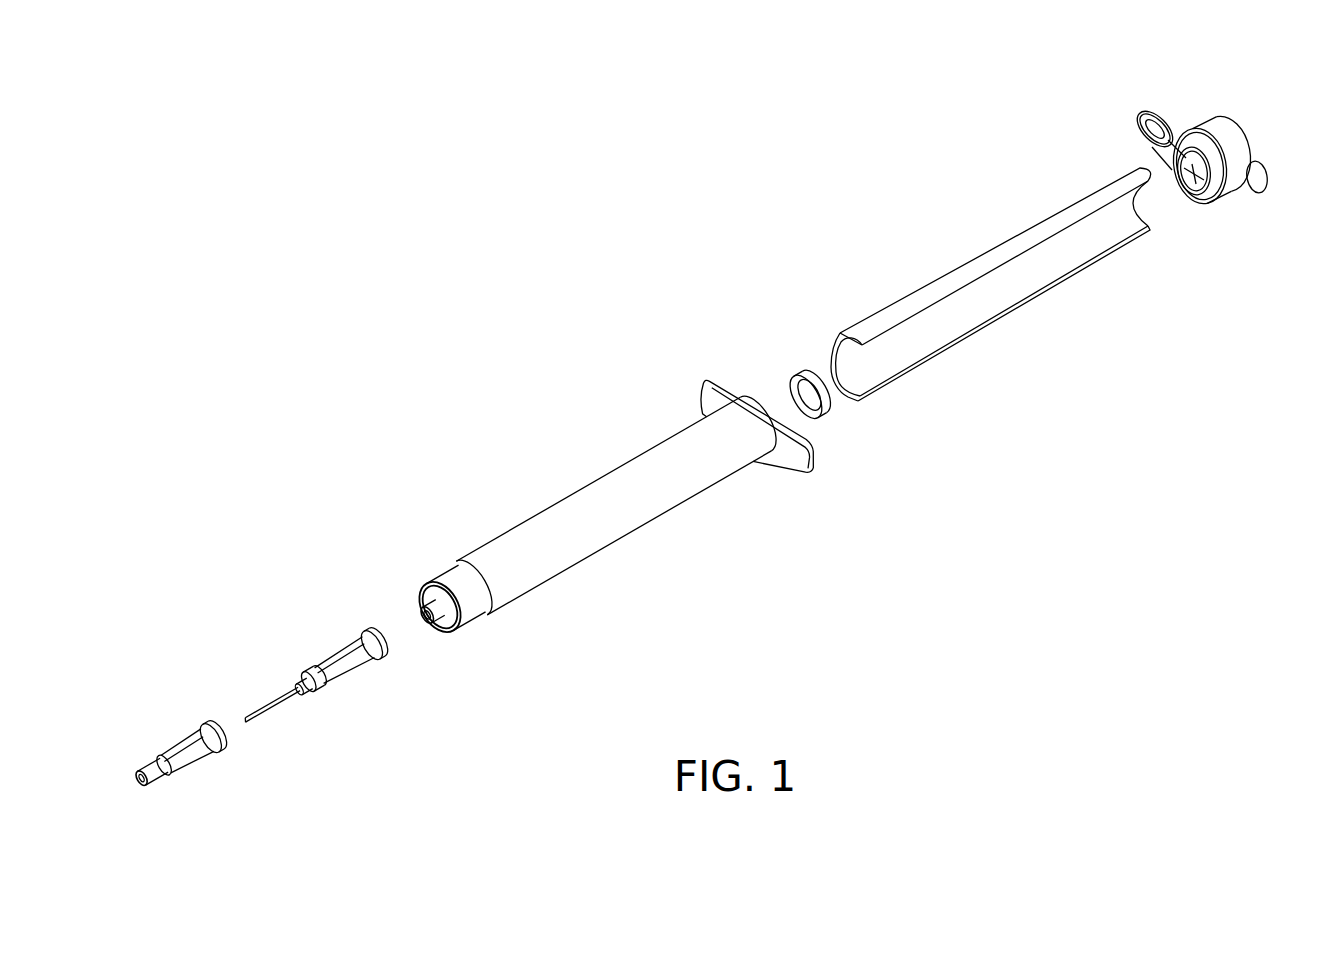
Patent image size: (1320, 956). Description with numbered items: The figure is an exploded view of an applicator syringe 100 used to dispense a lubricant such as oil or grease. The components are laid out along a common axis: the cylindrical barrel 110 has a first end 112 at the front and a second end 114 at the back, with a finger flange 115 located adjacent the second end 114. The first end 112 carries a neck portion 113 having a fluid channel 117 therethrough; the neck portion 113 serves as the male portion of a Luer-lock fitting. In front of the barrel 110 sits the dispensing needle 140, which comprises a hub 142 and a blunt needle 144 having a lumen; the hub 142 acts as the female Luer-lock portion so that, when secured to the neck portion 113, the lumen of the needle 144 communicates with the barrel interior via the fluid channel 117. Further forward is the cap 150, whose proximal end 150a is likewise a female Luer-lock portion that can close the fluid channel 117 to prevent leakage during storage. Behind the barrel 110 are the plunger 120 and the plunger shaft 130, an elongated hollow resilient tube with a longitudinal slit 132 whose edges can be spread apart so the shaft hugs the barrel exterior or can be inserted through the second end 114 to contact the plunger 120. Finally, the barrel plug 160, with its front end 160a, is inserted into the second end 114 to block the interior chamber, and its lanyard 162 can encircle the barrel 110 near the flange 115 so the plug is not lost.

The applicator syringe 100 is at (393, 233).
The barrel 110 is at (563, 527).
The first end 112 is at (502, 593).
The neck portion 113 is at (457, 585).
The second end 114 is at (748, 445).
The finger flange 115 is at (712, 393).
The fluid channel 117 is at (423, 613).
The plunger 120 is at (808, 380).
The plunger shaft 130 is at (932, 297).
The longitudinal slit 132 is at (985, 273).
The dispensing needle 140 is at (313, 663).
The hub 142 is at (387, 650).
The blunt needle 144 is at (277, 712).
The cap 150 is at (178, 742).
The proximal end 150a is at (227, 750).
The barrel plug 160 is at (1217, 132).
The front end 160a is at (1195, 185).
The lanyard 162 is at (1142, 117).